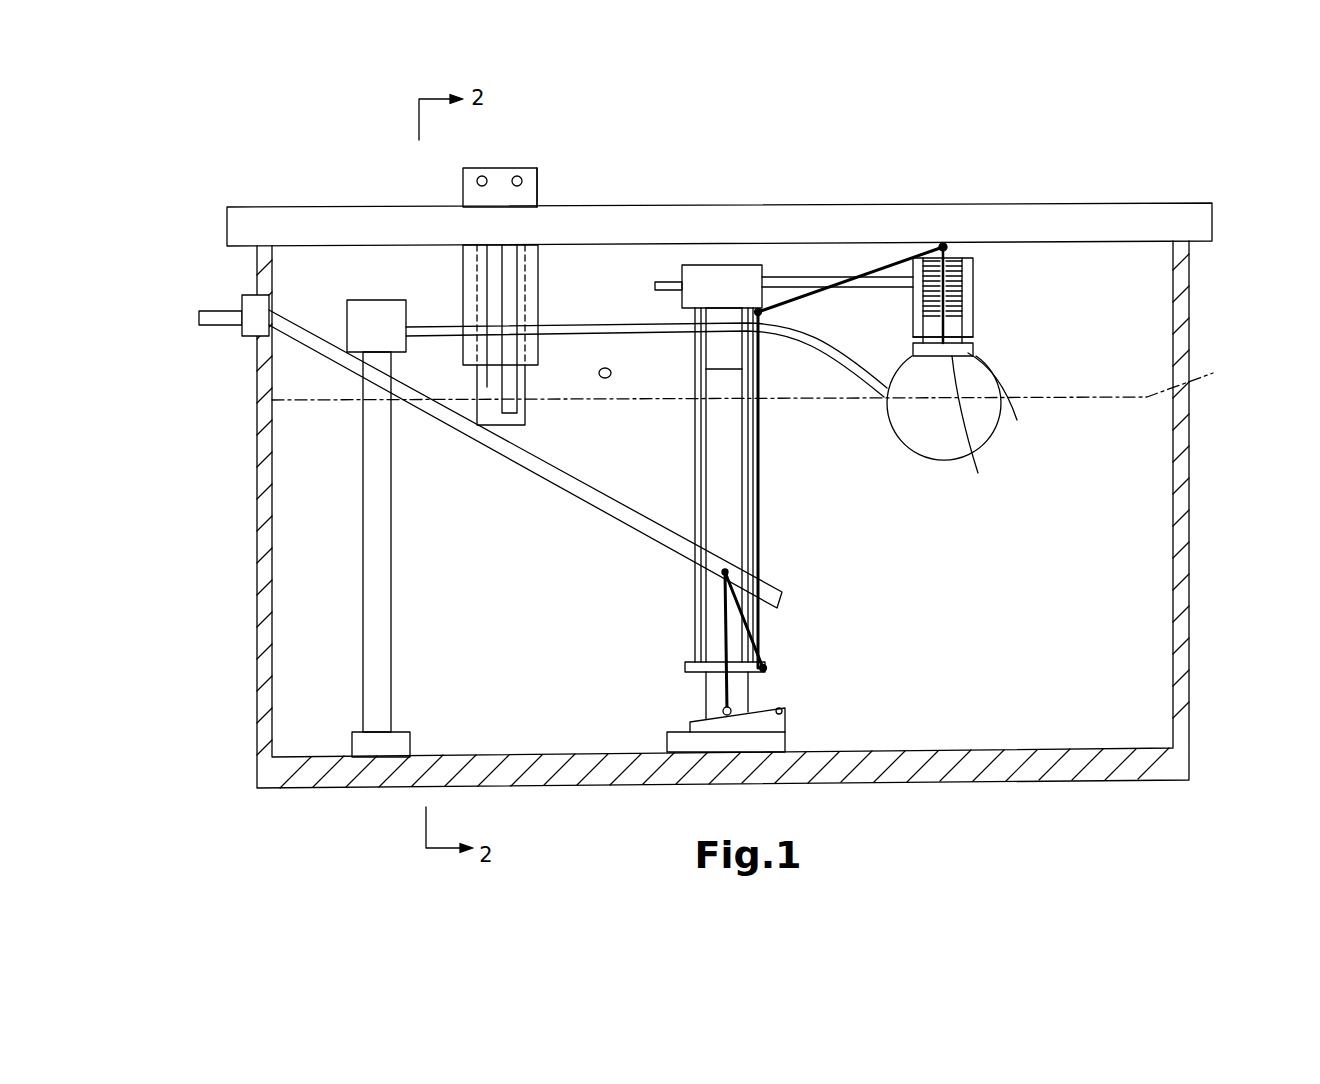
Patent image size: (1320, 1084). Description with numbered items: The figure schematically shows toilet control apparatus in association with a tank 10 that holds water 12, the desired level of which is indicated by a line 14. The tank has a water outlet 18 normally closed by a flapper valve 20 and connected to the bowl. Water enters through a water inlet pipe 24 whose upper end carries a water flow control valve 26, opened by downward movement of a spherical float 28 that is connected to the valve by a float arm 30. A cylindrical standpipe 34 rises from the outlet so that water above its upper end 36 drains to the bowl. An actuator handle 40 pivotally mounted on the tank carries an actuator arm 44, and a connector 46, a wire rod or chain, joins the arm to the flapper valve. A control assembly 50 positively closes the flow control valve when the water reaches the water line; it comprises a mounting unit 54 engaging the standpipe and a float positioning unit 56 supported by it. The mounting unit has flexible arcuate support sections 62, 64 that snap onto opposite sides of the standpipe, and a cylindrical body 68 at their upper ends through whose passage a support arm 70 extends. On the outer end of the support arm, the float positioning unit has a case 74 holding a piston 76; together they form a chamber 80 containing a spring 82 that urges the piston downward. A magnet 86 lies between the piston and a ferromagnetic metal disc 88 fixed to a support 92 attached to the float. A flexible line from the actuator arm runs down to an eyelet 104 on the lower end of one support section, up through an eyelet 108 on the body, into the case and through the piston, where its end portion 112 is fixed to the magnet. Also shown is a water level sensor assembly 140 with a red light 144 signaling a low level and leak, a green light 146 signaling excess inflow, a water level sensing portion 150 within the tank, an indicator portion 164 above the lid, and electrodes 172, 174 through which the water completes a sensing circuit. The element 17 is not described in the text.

The tank 10 is at (257, 513).
The water 12 is at (1117, 552).
The line 14 is at (766, 380).
The refill tube guide 17 is at (520, 382).
The water outlet 18 is at (790, 741).
The flapper valve 20 is at (770, 718).
The water inlet pipe 24 is at (380, 592).
The water flow control valve 26 is at (378, 322).
The float 28 is at (940, 430).
The float arm 30 is at (602, 327).
The standpipe 34 is at (727, 450).
The upper end 36 is at (720, 372).
The actuator handle 40 is at (223, 312).
The actuator arm 44 is at (556, 476).
The connector 46 is at (722, 620).
The control assembly 50 is at (792, 225).
The mounting unit 54 is at (725, 225).
The float positioning unit 56 is at (966, 246).
The support section 62 is at (695, 503).
The support section 64 is at (750, 505).
The body 68 is at (703, 278).
The support arm 70 is at (797, 283).
The case 74 is at (968, 287).
The piston 76 is at (957, 325).
The chamber 80 is at (980, 258).
The spring 82 is at (907, 263).
The magnet 86 is at (971, 426).
The metal disc 88 is at (905, 365).
The support 92 is at (1008, 392).
The eyelet 104 is at (766, 668).
The eyelet 108 is at (768, 313).
The end portion 112 is at (941, 333).
The water level sensor assembly 140 is at (506, 160).
The red light 144 is at (522, 177).
The green light 146 is at (481, 175).
The water level sensing portion 150 is at (461, 299).
The indicator portion 164 is at (540, 187).
The electrode 172 is at (515, 412).
The electrode 174 is at (487, 385).